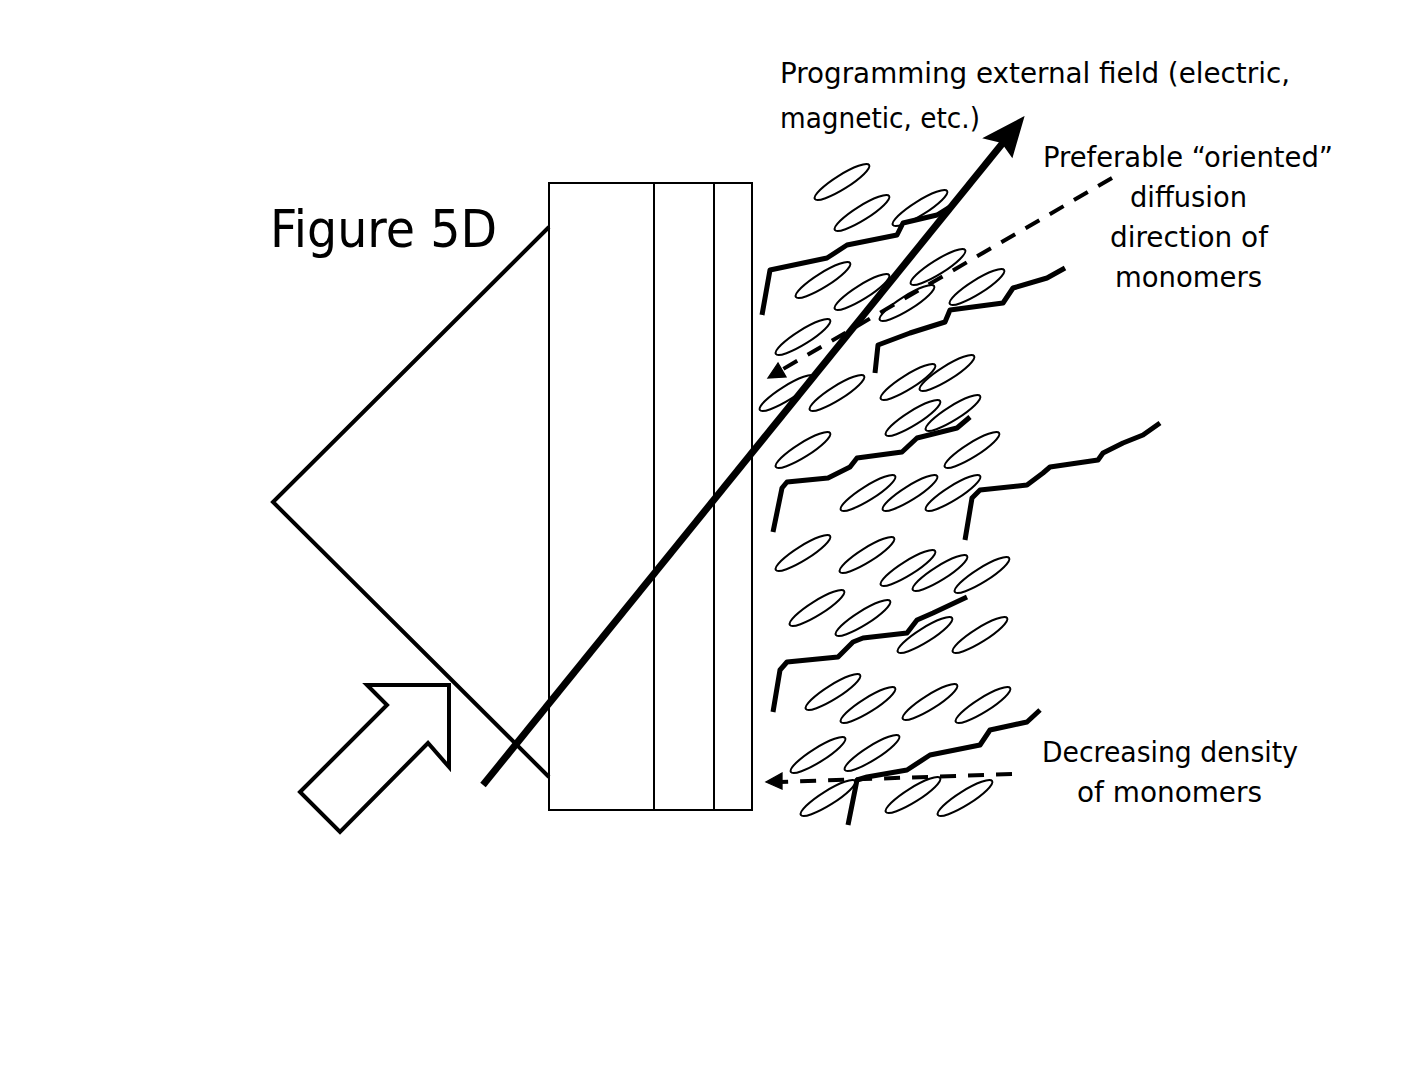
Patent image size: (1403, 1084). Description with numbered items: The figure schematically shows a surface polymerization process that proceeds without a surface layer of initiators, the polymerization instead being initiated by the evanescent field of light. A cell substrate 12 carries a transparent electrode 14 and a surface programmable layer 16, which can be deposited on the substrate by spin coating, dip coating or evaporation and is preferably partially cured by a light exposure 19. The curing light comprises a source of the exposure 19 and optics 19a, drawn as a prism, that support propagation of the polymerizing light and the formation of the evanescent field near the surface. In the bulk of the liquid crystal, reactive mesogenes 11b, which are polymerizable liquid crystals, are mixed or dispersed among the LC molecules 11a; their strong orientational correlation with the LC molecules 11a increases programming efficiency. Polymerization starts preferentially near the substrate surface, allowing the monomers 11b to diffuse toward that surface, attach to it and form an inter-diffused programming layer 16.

The cell substrate 12 is at (547, 200).
The transparent electrode 14 is at (665, 177).
The programmable layer 16 is at (732, 177).
The exposure 19 is at (327, 724).
The optics 19a is at (403, 365).
The LC molecules 11a is at (1013, 620).
The reactive mesogenes 11b is at (1080, 337).